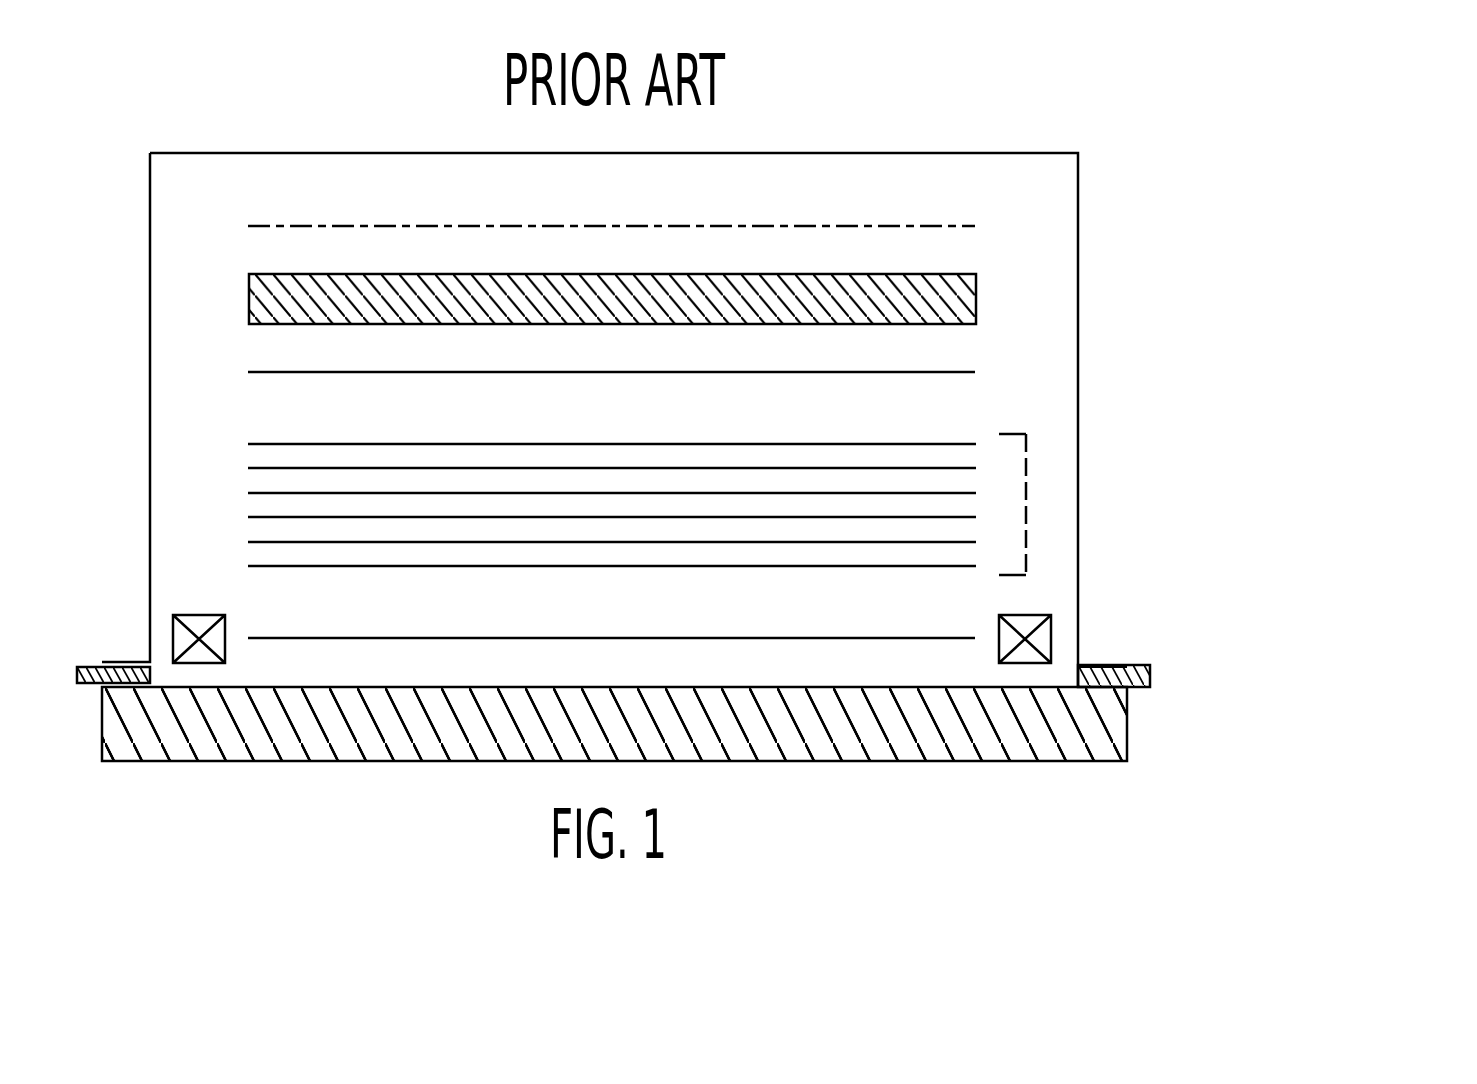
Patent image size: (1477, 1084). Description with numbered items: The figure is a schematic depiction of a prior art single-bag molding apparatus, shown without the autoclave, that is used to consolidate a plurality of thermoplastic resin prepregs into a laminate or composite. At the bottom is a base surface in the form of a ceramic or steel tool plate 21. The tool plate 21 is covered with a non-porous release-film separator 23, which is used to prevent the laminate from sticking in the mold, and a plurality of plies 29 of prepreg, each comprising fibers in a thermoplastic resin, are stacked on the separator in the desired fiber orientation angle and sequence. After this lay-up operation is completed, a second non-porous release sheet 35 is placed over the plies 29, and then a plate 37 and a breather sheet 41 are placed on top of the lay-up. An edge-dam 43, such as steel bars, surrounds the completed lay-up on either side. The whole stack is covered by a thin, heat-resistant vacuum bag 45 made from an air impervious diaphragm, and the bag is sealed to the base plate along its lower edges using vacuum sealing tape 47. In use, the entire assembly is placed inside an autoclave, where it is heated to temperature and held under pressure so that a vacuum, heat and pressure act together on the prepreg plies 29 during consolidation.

The vacuum bag 45 is at (1082, 165).
The breather sheet 41 is at (977, 226).
The plate 37 is at (979, 295).
The second non-porous release sheet 35 is at (974, 372).
The plies 29 is at (1029, 519).
The non-porous release-film separator 23 is at (882, 635).
The edge-dam 43 is at (1055, 637).
The vacuum sealing tape 47 is at (1154, 679).
The tool plate 21 is at (1130, 734).